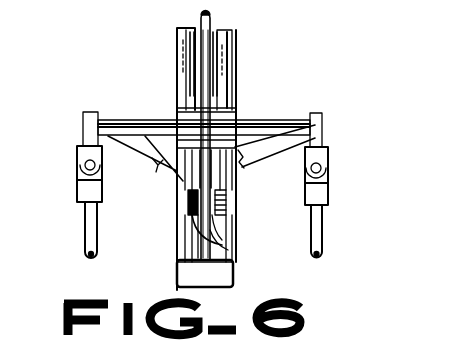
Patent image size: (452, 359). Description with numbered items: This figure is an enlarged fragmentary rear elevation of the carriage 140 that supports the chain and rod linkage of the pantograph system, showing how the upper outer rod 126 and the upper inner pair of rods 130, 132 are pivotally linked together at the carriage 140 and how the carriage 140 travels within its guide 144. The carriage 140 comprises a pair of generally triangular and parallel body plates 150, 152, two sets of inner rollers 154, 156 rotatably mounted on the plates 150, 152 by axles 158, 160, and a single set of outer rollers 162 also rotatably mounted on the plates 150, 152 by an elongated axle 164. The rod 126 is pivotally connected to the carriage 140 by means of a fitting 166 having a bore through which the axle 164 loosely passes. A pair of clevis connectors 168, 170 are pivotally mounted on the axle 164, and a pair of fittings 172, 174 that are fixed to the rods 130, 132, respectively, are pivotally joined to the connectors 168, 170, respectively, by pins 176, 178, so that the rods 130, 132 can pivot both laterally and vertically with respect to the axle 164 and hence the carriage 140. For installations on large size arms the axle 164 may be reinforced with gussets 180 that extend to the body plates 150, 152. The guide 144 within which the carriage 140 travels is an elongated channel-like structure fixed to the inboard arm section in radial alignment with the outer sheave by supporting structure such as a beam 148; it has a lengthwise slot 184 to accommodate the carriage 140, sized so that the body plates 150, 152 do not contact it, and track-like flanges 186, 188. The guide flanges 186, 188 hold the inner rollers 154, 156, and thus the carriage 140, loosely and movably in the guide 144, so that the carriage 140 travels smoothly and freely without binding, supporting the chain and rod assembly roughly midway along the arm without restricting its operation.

The upper outer rod 126 is at (204, 93).
The upper inner rod 130 is at (323, 234).
The upper inner rod 132 is at (84, 228).
The carriage 140 is at (302, 110).
The guide 144 is at (241, 269).
The beam 148 is at (185, 276).
The body plate 150 is at (193, 72).
The body plate 152 is at (228, 74).
The inner rollers 154 is at (216, 243).
The inner rollers 156 is at (210, 26).
The axle 158 is at (181, 203).
The axle 160 is at (222, 36).
The outer rollers 162 is at (225, 123).
The elongated axle 164 is at (118, 118).
The fitting 166 is at (212, 163).
The clevis connector 168 is at (328, 162).
The clevis connector 170 is at (77, 153).
The fitting 172 is at (328, 191).
The fitting 174 is at (78, 189).
The pin 176 is at (318, 162).
The pin 178 is at (80, 170).
The gussets 180 is at (160, 166).
The slot 184 is at (186, 234).
The track-like flange 186 is at (223, 234).
The track-like flange 188 is at (184, 245).